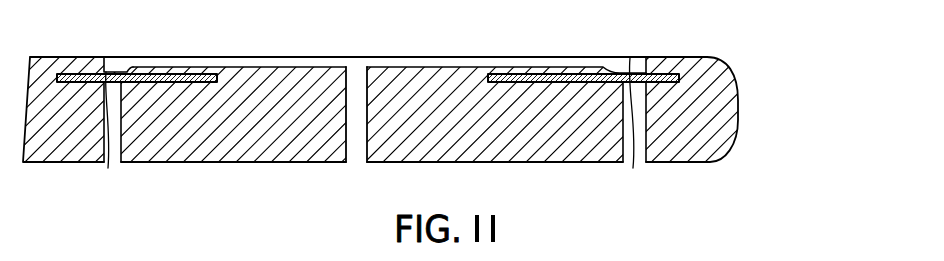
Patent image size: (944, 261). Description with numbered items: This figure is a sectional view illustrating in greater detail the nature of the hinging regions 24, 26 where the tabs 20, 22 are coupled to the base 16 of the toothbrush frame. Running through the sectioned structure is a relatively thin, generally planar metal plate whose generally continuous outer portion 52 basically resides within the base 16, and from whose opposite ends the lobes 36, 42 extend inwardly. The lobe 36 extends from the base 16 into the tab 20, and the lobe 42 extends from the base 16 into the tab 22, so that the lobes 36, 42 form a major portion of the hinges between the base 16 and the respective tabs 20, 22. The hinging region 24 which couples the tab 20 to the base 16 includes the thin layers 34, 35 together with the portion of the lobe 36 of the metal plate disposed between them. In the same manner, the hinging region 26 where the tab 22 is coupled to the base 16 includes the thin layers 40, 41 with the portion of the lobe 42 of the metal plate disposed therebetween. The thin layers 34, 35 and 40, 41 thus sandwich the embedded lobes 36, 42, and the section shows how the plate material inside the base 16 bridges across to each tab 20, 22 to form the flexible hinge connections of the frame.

The base 16 is at (707, 93).
The tab 20 is at (257, 137).
The tab 22 is at (503, 133).
The hinging region 24 is at (118, 68).
The hinging region 26 is at (602, 57).
The thin layer 34 is at (106, 136).
The thin layer 35 is at (107, 70).
The lobe 36 is at (148, 75).
The thin layer 40 is at (637, 127).
The thin layer 41 is at (630, 58).
The lobe 42 is at (548, 73).
The generally continuous outer portion 52 is at (75, 58).